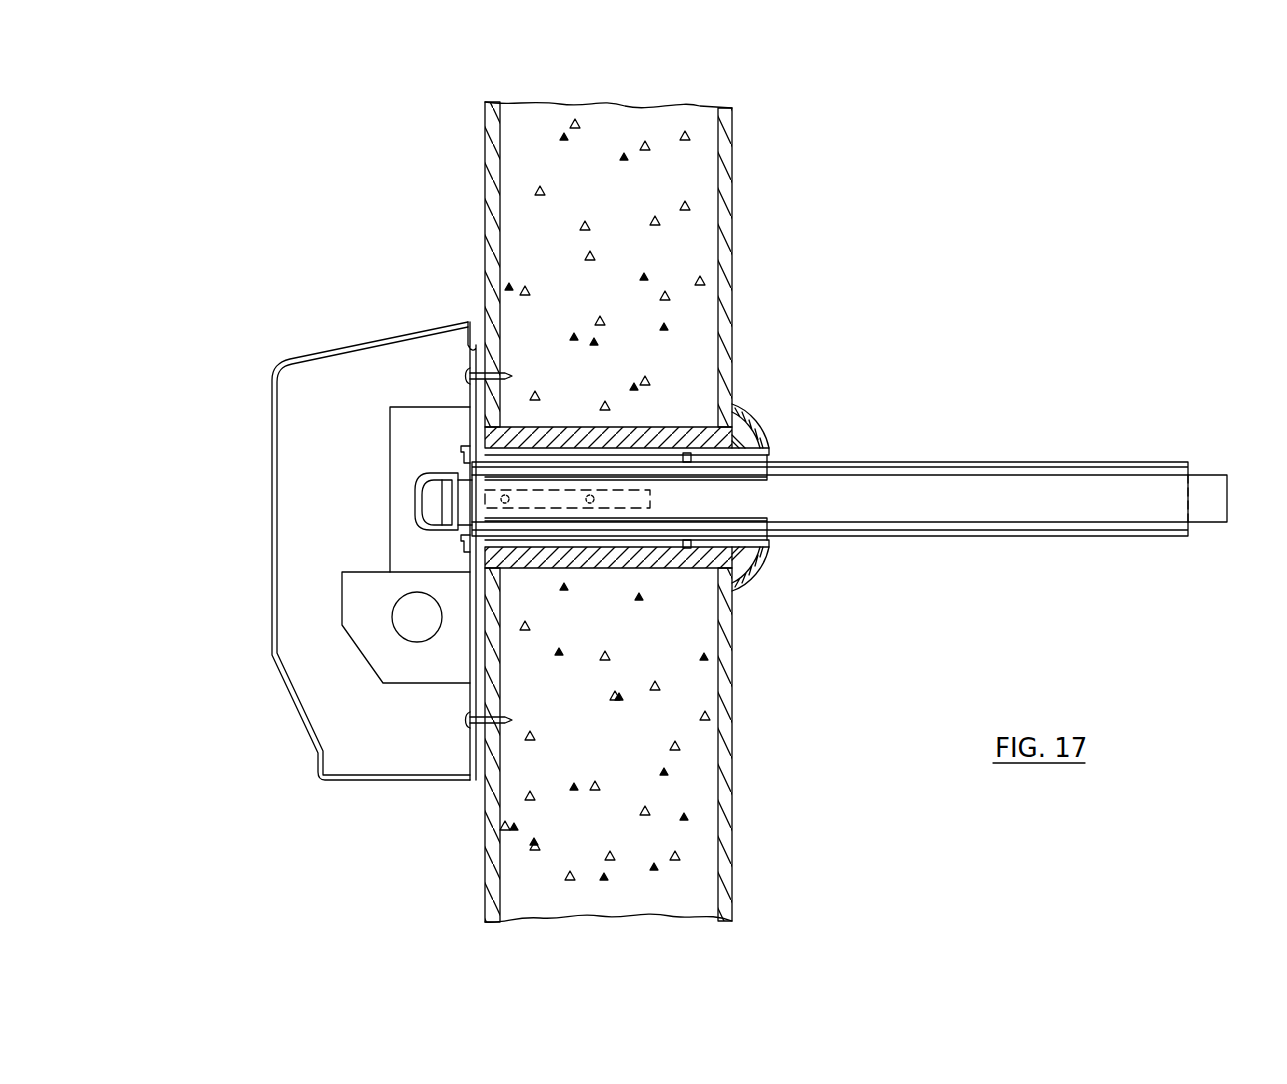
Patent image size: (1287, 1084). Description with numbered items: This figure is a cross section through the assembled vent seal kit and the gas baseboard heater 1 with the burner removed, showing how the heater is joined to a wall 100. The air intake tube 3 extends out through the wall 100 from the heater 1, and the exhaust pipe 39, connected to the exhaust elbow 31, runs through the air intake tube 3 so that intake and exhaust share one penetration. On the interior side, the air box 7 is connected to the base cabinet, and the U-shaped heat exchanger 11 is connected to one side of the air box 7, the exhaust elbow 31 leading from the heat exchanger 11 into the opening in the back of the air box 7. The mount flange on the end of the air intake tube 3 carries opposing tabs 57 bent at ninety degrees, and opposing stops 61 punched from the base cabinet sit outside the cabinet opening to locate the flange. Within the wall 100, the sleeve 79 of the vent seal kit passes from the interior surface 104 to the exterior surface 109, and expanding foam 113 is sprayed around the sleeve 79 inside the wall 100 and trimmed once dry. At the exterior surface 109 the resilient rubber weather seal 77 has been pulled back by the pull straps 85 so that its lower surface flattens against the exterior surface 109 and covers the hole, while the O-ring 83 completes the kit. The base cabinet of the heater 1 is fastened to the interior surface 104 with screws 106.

The gas baseboard heater 1 is at (283, 365).
The air intake tube 3 is at (1062, 462).
The air box 7 is at (340, 603).
The heat exchanger 11 is at (393, 627).
The exhaust elbow 31 is at (414, 496).
The exhaust pipe 39 is at (1208, 473).
The tab 57 is at (468, 432).
The stop 61 is at (462, 452).
The weather seal 77 is at (748, 413).
The sleeve 79 is at (770, 446).
The O-ring 83 is at (686, 548).
The pull strap 85 is at (655, 492).
The wall 100 is at (680, 178).
The interior surface 104 is at (492, 180).
The screws 106 is at (470, 720).
The exterior surface 109 is at (737, 247).
The expanding foam 113 is at (640, 428).